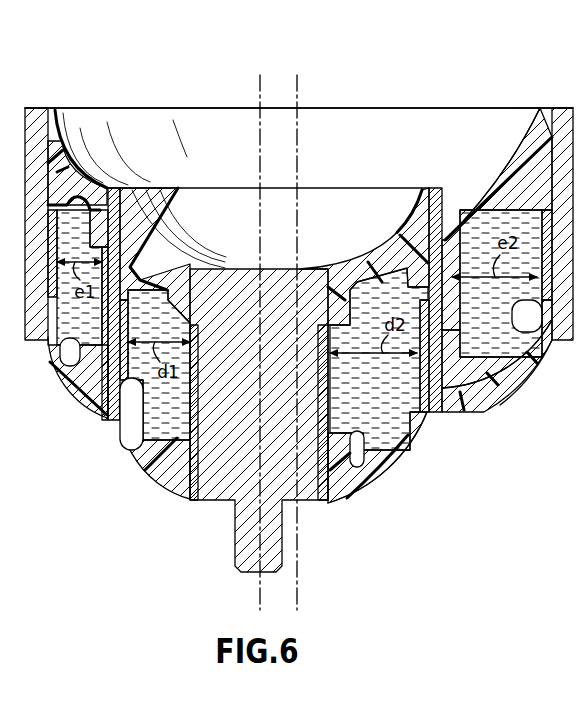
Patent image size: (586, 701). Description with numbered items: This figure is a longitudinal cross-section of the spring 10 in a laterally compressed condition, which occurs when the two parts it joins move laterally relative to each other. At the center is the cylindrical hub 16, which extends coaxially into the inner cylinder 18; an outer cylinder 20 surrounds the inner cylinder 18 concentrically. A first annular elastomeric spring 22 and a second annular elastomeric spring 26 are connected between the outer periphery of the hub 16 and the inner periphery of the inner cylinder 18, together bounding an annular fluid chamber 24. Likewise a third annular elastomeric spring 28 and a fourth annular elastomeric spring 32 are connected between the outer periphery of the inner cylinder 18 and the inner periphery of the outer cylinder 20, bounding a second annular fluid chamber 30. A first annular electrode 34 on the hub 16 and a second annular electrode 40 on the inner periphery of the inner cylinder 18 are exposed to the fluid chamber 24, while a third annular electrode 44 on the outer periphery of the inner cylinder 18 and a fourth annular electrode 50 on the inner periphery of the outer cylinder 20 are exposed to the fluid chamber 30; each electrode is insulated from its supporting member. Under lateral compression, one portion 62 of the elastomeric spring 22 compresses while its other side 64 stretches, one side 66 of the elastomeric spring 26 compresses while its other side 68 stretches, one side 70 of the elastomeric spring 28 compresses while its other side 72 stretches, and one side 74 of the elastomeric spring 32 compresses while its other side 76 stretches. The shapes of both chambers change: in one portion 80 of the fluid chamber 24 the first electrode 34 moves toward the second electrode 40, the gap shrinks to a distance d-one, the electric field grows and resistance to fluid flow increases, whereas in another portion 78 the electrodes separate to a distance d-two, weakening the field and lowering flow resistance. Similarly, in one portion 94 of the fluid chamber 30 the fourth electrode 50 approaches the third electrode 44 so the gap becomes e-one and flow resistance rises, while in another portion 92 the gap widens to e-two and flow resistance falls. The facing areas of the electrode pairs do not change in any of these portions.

The spring 10 is at (343, 82).
The cylindrical hub 16 is at (312, 473).
The inner cylinder 18 is at (115, 197).
The outer cylinder 20 is at (558, 120).
The first annular shaped elastomeric spring 22 is at (403, 478).
The annular shaped fluid chamber 24 is at (353, 480).
The second annular shaped elastomeric spring 26 is at (400, 217).
The third annular shaped elastomeric spring 28 is at (532, 385).
The second annular shaped fluid chamber 30 is at (498, 325).
The fourth annular shaped elastomeric spring 32 is at (510, 153).
The first annular shaped electrode 34 is at (202, 455).
The second annular shaped electrode 40 is at (100, 400).
The third annular shaped electrode 44 is at (80, 380).
The fourth annular shaped electrode 50 is at (48, 298).
The one portion of the elastomeric spring 62 is at (170, 473).
The other side of the elastomeric spring 64 is at (357, 410).
The one side of the elastomeric spring 66 is at (150, 240).
The other side of the elastomeric spring 68 is at (378, 262).
The one side of the elastomeric spring 70 is at (82, 407).
The other side of the elastomeric spring 72 is at (512, 383).
The one side of the elastomeric spring 74 is at (62, 170).
The other side of the elastomeric spring 76 is at (478, 185).
The portion of the fluid chamber 78 is at (385, 422).
The portion of the fluid chamber 80 is at (138, 442).
The portion of the fluid chamber 92 is at (500, 203).
The portion of the fluid chamber 94 is at (74, 216).